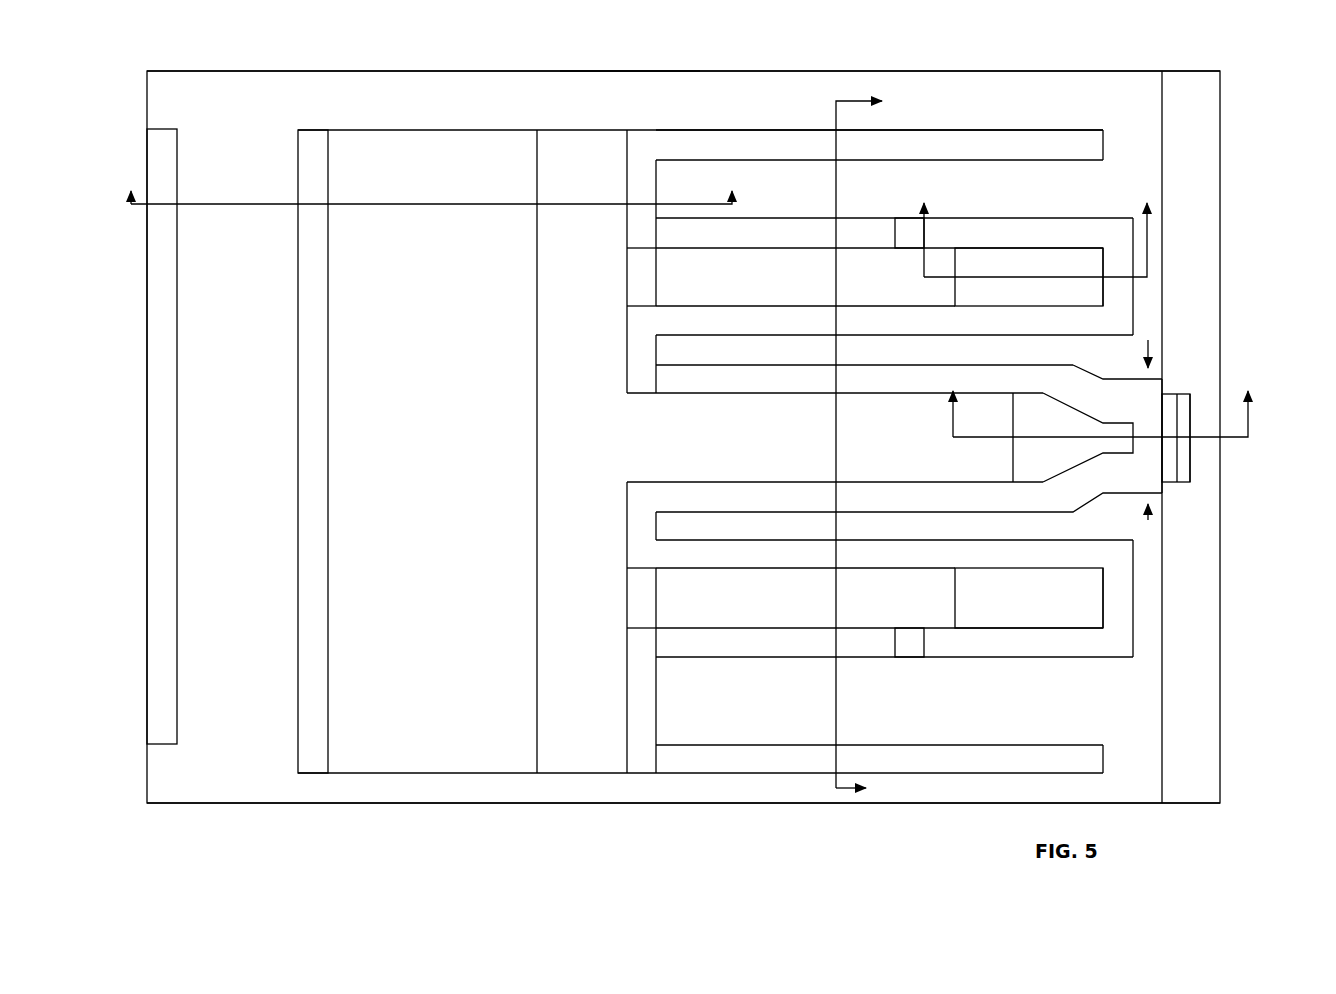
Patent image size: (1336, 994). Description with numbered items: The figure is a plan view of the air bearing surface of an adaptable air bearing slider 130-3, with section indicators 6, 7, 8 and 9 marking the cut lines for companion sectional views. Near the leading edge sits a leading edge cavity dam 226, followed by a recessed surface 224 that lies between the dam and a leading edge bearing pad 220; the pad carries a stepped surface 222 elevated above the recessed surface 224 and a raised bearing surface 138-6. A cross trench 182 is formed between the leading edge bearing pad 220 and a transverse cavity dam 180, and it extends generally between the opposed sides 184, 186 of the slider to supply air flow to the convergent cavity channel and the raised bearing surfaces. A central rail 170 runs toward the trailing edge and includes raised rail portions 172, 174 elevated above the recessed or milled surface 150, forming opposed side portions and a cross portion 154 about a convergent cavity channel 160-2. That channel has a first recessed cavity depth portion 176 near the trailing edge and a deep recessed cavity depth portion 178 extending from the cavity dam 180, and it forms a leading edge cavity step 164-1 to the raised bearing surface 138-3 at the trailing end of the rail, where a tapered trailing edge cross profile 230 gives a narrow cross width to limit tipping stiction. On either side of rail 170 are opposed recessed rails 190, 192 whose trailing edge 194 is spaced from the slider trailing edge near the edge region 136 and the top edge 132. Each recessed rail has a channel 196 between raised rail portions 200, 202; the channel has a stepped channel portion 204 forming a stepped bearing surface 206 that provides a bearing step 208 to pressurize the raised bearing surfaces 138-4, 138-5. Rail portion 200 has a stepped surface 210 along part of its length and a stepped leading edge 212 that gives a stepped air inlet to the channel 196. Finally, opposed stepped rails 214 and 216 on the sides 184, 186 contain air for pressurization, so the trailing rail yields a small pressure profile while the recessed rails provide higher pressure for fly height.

The air bearing slider 130-3 is at (840, 42).
The top edge 132 is at (430, 71).
The side of the slider 184 is at (630, 71).
The side of the slider 186 is at (360, 803).
The edge region 136 is at (1196, 606).
The raised bearing surface 138-3 is at (1148, 447).
The raised bearing surface 138-4 is at (1121, 295).
The raised bearing surface 138-5 is at (1135, 590).
The raised bearing surface 138-6 is at (440, 672).
The recessed or milled surface 150 is at (924, 188).
The cross portion 154 is at (1190, 402).
The convergent cavity channel 160-2 is at (1031, 421).
The leading edge cavity step 164-1 is at (1153, 430).
The rail 170 is at (1031, 387).
The raised rail portion 172 is at (898, 352).
The raised rail portion 174 is at (903, 497).
The first recessed cavity depth portion 176 is at (1035, 453).
The deep recessed cavity depth portion 178 is at (862, 437).
The transverse cavity dam 180 is at (658, 162).
The cross trench 182 is at (560, 445).
The recessed rail 190 is at (866, 217).
The recessed rail 192 is at (863, 644).
The trailing edge 194 is at (1133, 282).
The channel 196 is at (805, 442).
The raised rail portion 200 is at (906, 232).
The raised rail portion 202 is at (745, 322).
The stepped channel portion 204 is at (970, 263).
The stepped bearing surface 206 is at (1032, 300).
The bearing step 208 is at (1102, 266).
The stepped surface 210 is at (750, 216).
The stepped leading edge 212 is at (627, 277).
The stepped rail 214 is at (1012, 144).
The stepped rail 216 is at (1028, 760).
The leading edge bearing pad 220 is at (700, 451).
The stepped surface 222 is at (312, 423).
The recessed surface 224 is at (256, 542).
The leading edge cavity dam 226 is at (162, 408).
The tapered trailing edge cross profile 230 is at (1200, 335).
The section line 6 is at (1094, 399).
The section line 7 is at (1038, 223).
The section line 8 is at (872, 446).
The section line 9 is at (428, 181).